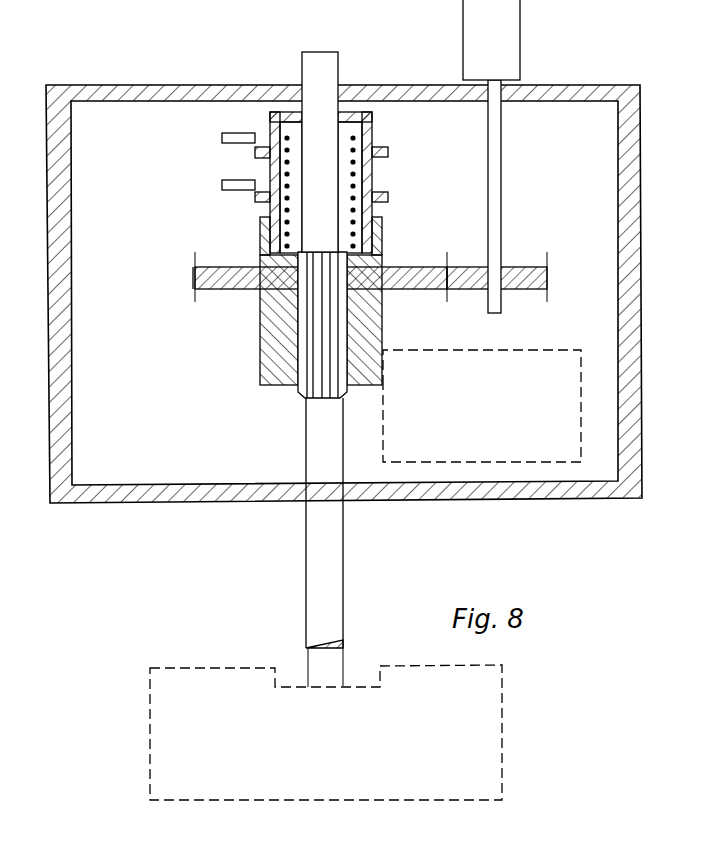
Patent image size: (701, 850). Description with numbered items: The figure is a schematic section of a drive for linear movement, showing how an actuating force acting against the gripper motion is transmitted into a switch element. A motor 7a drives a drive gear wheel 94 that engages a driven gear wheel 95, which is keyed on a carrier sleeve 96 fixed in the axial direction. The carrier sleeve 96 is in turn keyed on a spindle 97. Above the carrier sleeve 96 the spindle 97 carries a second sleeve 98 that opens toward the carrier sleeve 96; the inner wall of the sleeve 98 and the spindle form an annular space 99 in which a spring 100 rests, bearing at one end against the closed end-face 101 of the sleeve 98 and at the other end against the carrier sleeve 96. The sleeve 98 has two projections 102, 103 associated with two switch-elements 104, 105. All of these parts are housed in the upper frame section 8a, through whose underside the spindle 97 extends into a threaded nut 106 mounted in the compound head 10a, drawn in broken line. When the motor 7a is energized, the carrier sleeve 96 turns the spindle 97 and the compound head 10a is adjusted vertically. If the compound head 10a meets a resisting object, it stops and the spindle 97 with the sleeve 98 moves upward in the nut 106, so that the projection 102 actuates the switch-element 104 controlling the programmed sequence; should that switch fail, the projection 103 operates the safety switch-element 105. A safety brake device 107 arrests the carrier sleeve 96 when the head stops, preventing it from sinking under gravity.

The motor 7a is at (521, 43).
The upper frame section 8a is at (584, 492).
The compound head 10a is at (502, 718).
The drive gear wheel 94 is at (527, 264).
The driven gear wheel 95 is at (415, 265).
The carrier sleeve 96 is at (262, 368).
The spindle 97 is at (303, 393).
The sleeve 98 is at (369, 128).
The annular space 99 is at (297, 132).
The spring 100 is at (356, 187).
The closed end-face 101 is at (343, 120).
The projection 102 is at (253, 202).
The projection 103 is at (258, 147).
The switch-element 104 is at (222, 184).
The switch-element 105 is at (222, 138).
The threaded nut 106 is at (294, 678).
The safety brake device 107 is at (553, 348).